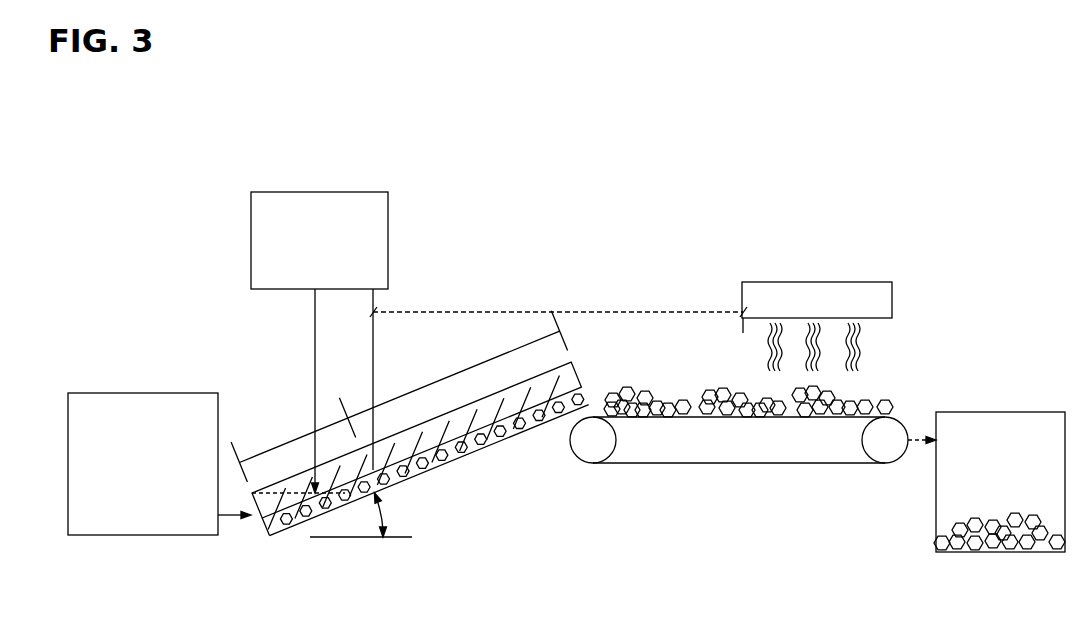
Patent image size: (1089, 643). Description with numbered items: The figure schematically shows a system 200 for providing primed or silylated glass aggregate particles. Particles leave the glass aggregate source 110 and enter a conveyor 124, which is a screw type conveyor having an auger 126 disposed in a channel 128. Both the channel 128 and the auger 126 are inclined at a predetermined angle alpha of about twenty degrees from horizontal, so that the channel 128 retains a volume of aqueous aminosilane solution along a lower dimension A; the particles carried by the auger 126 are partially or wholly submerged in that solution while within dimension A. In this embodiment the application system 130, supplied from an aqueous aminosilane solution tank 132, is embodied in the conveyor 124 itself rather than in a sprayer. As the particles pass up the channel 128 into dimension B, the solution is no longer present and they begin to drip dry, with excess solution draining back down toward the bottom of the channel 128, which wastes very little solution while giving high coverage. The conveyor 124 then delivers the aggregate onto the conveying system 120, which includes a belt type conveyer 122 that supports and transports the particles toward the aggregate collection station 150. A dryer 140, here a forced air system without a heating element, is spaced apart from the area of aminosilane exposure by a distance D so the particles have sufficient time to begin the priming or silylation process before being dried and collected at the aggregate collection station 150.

The glass aggregate source 110 is at (121, 477).
The conveying system 120 is at (739, 452).
The belt type conveyer 122 is at (717, 454).
The conveyor 124 is at (431, 448).
The auger 126 is at (470, 457).
The channel 128 is at (510, 443).
The application system 130 is at (242, 225).
The aqueous aminosilane solution tank 132 is at (297, 252).
The dryer 140 is at (796, 312).
The aggregate collection station 150 is at (979, 494).
The system 200 is at (116, 273).